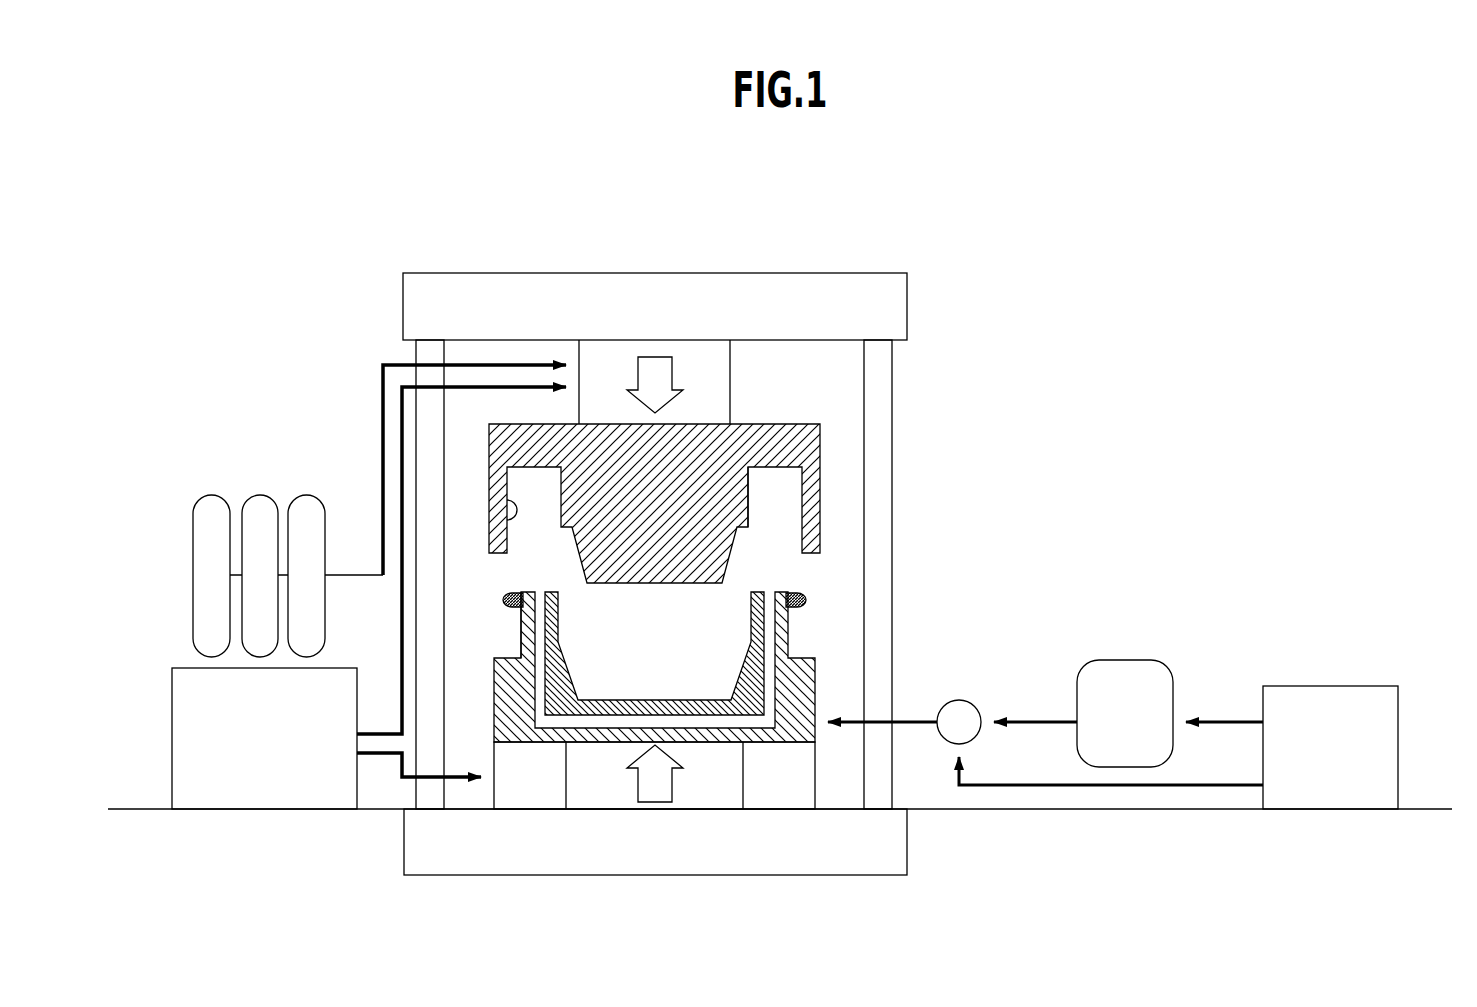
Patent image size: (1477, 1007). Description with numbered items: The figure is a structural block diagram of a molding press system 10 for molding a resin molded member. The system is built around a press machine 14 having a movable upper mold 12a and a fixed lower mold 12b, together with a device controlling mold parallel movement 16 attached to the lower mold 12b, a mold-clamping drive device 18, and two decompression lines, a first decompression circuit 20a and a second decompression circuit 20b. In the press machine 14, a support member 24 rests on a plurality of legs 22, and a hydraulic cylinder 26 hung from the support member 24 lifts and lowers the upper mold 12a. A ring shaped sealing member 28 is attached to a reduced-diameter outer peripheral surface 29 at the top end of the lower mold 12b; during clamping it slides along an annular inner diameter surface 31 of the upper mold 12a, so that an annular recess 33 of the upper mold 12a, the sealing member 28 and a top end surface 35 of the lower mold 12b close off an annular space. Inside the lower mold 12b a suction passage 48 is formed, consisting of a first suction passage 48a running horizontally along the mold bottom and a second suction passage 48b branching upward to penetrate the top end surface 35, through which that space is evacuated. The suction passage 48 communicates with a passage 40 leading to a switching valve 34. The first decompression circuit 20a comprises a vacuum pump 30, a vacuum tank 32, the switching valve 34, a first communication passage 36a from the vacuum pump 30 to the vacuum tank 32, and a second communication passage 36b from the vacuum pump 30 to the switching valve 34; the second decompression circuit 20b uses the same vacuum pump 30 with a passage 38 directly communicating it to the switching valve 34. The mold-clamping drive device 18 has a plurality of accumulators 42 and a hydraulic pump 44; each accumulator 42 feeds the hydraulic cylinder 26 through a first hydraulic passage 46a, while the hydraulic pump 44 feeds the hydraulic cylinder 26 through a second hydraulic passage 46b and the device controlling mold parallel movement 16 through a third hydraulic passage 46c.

The molding press system 10 is at (1050, 224).
The press machine 14 is at (834, 261).
The support member 24 is at (652, 273).
The legs 22 is at (416, 350).
The device controlling mold parallel movement 16 is at (490, 798).
The hydraulic cylinder 26 is at (730, 383).
The upper mold 12a is at (790, 424).
The annular recess 33 is at (793, 483).
The annular inner diameter surface 31 is at (495, 518).
The lower mold 12b is at (815, 668).
The reduced-diameter outer peripheral surface 29 is at (521, 630).
The top end surface 35 is at (785, 595).
The sealing member 28 is at (805, 602).
The suction passage 48 is at (678, 932).
The first suction passage 48a is at (702, 724).
The second suction passage 48b is at (768, 653).
The mold-clamping drive device 18 is at (190, 458).
The accumulators 42 is at (213, 495).
The hydraulic pump 44 is at (172, 737).
The first hydraulic passage 46a is at (383, 397).
The second hydraulic passage 46b is at (402, 627).
The third hydraulic passage 46c is at (385, 757).
The passage 40 is at (912, 720).
The switching valve 34 is at (975, 702).
The second communication passage 36b is at (1020, 725).
The return pipe 38 is at (1100, 787).
The vacuum tank 32 is at (1120, 660).
The first decompression circuit 20a is at (1185, 695).
The first communication passage 36a is at (1208, 725).
The second decompression circuit 20b is at (1185, 790).
The vacuum pump 30 is at (1398, 748).